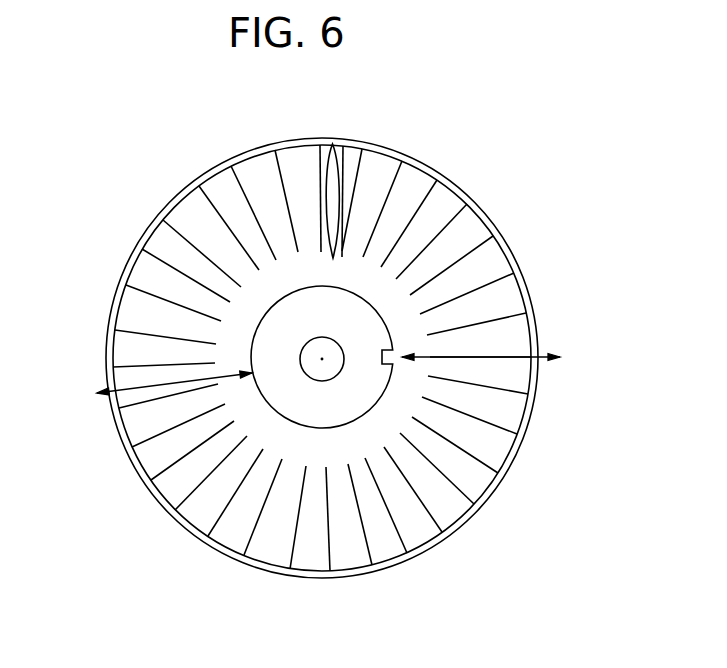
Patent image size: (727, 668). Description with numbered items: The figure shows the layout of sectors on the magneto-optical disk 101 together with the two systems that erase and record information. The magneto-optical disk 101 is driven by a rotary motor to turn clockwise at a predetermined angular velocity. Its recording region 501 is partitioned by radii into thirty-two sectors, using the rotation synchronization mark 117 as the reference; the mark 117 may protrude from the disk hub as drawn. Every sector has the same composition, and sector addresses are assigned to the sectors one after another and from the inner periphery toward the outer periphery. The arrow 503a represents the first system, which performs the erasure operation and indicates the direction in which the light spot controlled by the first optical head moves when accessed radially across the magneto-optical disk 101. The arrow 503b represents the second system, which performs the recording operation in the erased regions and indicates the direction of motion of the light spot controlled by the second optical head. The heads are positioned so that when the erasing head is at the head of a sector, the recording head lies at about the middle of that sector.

The magneto-optical disk 101 is at (482, 208).
The rotation synchronization mark 117 is at (380, 357).
The recording region 501 is at (345, 143).
The first system arrow 503a is at (560, 357).
The second system arrow 503b is at (97, 393).